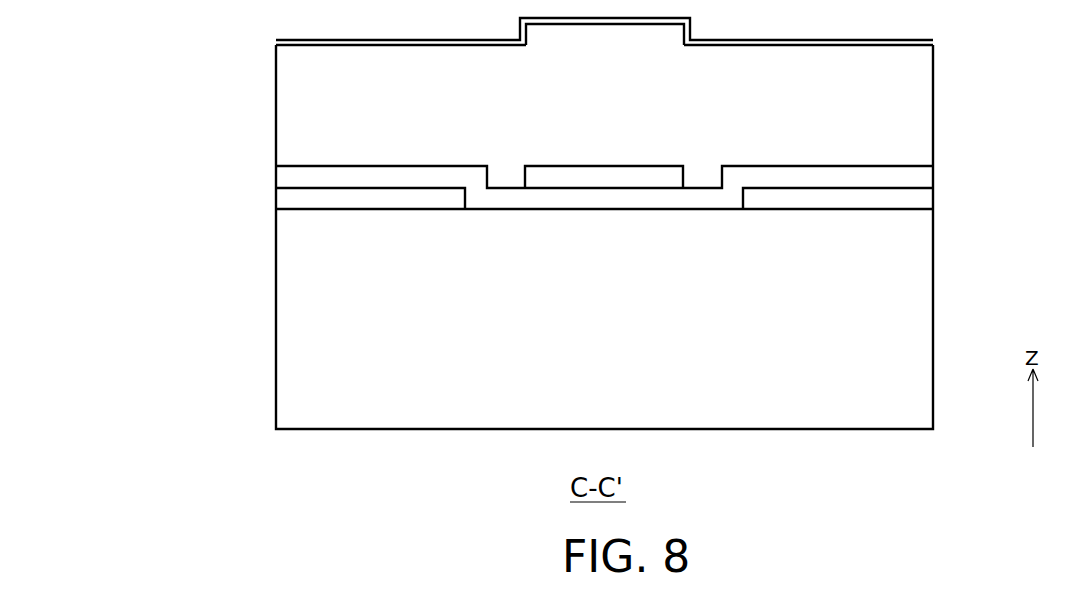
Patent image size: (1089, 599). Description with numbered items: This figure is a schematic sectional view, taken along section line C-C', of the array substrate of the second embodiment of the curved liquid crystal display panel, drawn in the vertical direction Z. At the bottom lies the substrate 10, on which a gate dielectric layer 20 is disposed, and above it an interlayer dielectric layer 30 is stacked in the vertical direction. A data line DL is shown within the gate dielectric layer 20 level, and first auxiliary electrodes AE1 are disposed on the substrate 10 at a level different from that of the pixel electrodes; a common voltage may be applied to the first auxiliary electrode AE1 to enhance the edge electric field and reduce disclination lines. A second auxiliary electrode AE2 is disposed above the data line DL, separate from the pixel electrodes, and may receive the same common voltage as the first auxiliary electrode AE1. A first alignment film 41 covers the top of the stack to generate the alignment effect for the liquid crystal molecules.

The substrate 10 is at (305, 320).
The gate dielectric layer 20 is at (305, 175).
The interlayer dielectric layer 30 is at (305, 113).
The first alignment film 41 is at (276, 41).
The first auxiliary electrode AE1 is at (305, 196).
The second auxiliary electrode AE2 is at (587, 32).
The data line DL is at (622, 178).